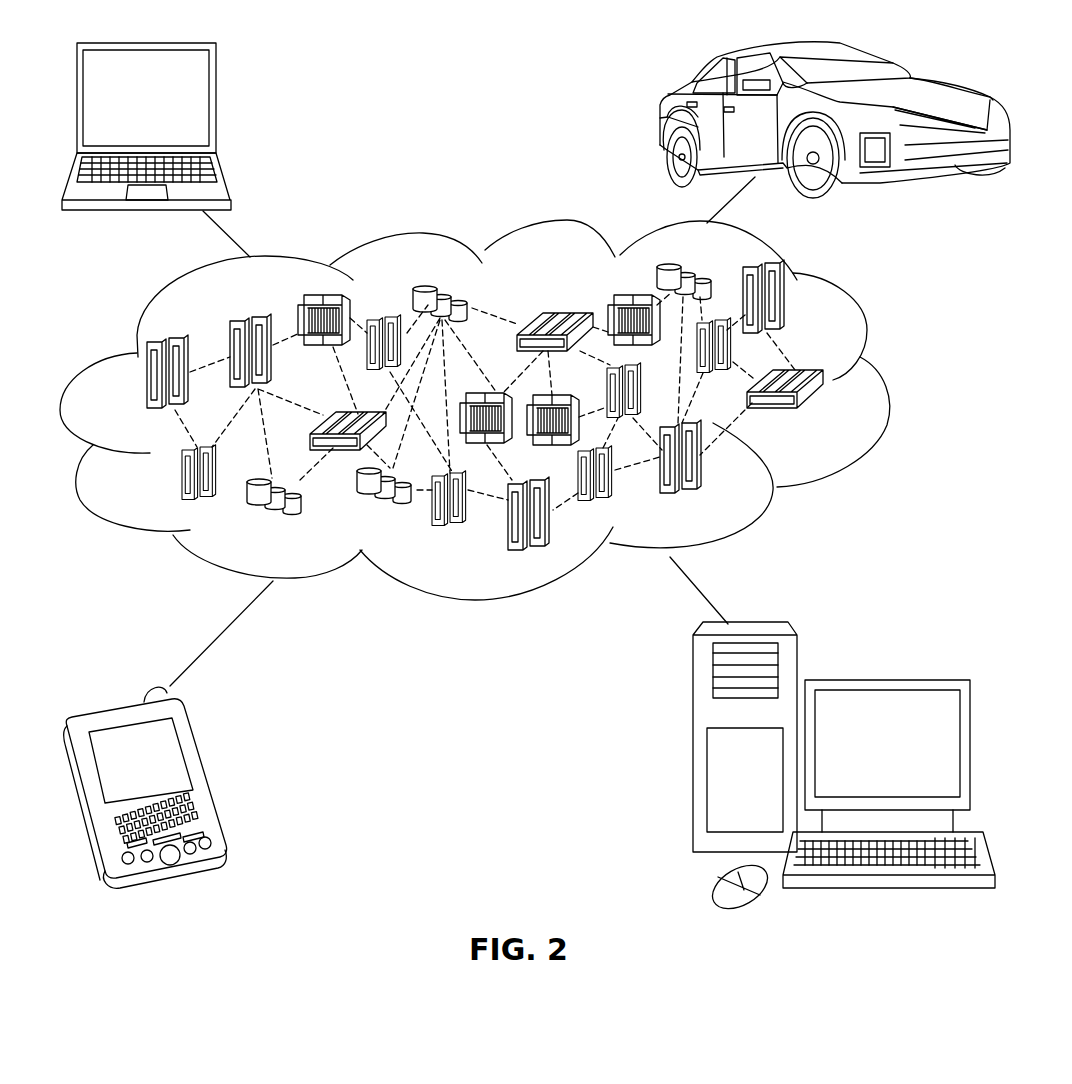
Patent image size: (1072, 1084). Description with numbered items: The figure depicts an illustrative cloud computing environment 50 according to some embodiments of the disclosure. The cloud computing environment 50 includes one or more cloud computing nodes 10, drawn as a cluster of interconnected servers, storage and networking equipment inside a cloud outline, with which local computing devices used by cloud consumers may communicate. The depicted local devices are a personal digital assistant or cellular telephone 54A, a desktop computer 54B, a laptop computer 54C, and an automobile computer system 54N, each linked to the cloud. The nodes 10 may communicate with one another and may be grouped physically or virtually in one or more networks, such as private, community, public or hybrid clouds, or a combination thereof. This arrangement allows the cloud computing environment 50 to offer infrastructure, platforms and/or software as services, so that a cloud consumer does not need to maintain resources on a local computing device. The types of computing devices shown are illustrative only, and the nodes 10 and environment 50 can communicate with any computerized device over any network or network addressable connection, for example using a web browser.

The cloud computing node 10 is at (827, 413).
The cloud computing environment 50 is at (885, 383).
The personal digital assistant (PDA) or cellular telephone 54A is at (210, 770).
The desktop computer 54B is at (882, 680).
The laptop computer 54C is at (216, 107).
The automobile computer system 54N is at (660, 120).